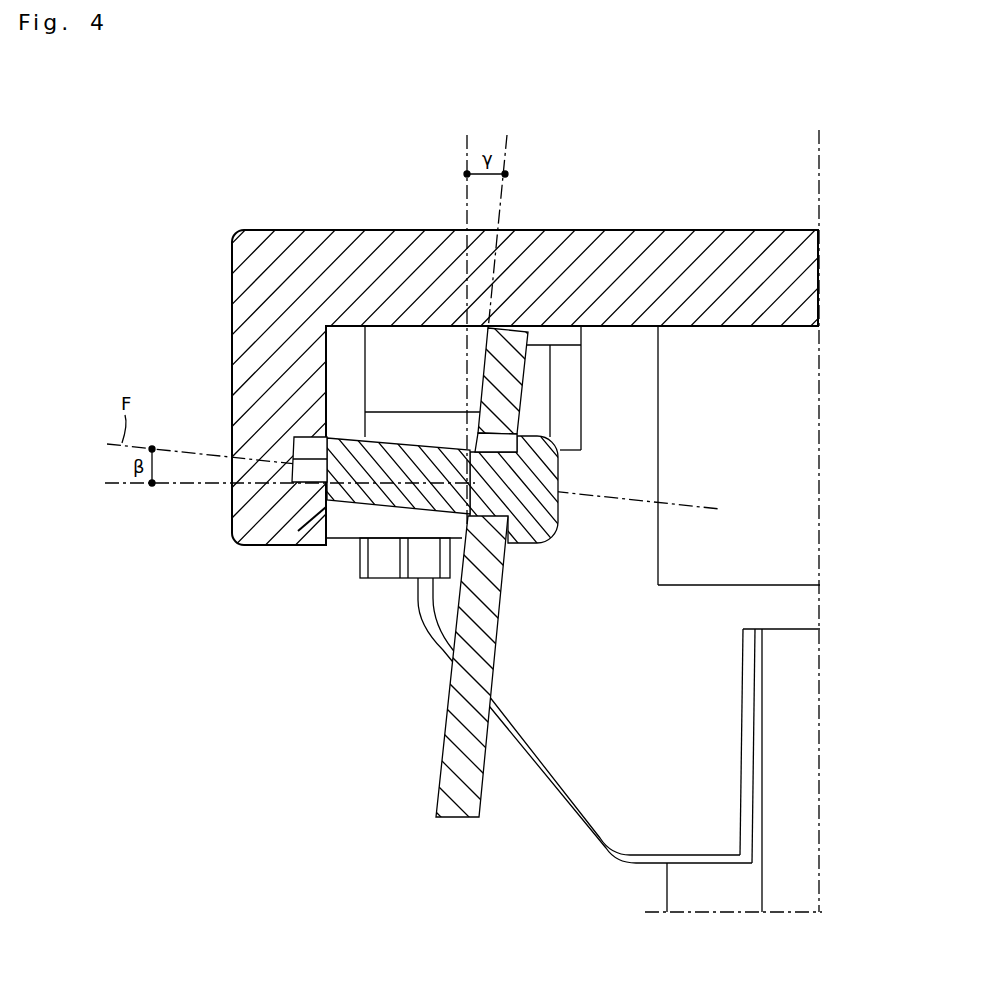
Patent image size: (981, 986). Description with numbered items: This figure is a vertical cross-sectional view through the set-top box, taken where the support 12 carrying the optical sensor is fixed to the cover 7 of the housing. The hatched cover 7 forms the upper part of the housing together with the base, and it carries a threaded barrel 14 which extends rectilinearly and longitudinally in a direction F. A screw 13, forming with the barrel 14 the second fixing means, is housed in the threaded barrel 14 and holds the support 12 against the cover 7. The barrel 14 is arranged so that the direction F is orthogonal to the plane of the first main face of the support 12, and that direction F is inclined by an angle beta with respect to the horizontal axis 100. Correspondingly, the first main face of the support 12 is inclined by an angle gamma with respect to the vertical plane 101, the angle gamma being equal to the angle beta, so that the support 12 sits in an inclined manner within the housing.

The cover 7 is at (695, 281).
The support 12 is at (437, 796).
The screw 13 is at (348, 503).
The threaded barrel 14 is at (315, 435).
The horizontal axis 100 is at (122, 486).
The vertical plane 101 is at (466, 155).